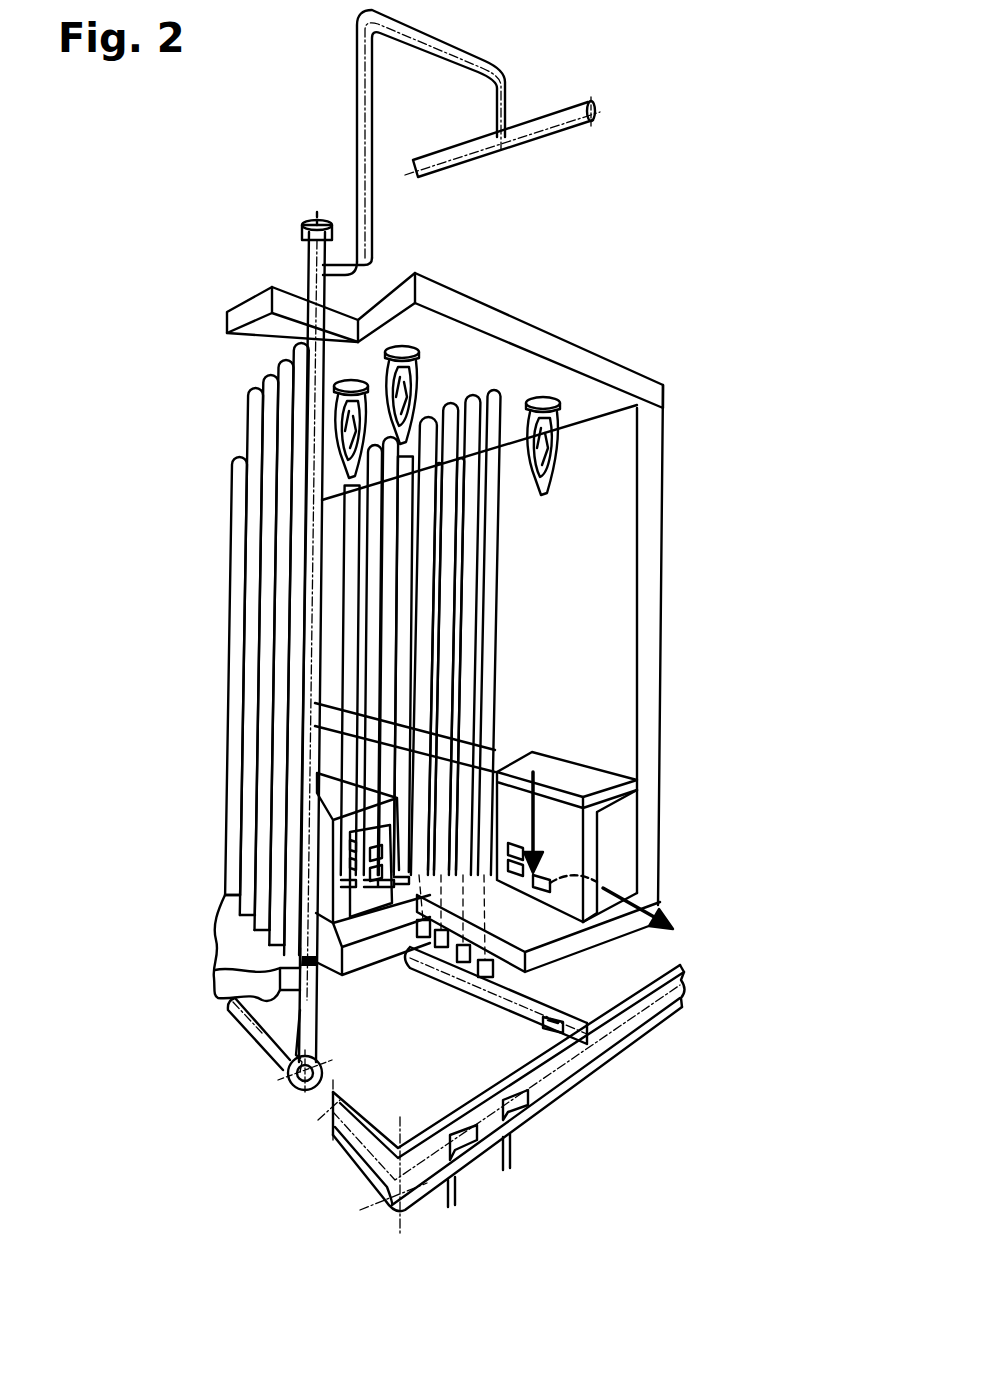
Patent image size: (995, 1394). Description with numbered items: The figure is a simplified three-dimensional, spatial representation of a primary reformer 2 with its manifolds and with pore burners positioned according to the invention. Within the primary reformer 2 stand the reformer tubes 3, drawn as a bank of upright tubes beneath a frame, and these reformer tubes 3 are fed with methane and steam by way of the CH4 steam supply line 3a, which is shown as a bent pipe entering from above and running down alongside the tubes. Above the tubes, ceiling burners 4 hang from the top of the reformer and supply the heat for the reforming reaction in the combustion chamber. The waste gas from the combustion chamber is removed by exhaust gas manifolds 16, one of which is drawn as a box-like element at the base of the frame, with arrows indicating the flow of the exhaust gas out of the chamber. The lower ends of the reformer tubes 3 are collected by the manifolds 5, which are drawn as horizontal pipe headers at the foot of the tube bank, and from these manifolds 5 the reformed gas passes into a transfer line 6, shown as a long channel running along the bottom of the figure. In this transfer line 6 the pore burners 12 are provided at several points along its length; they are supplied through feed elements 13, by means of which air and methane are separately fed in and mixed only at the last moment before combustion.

The primary reformer 2 is at (687, 220).
The reformer tubes 3 is at (283, 697).
The CH4 steam supply line 3a is at (358, 100).
The ceiling burners 4 is at (545, 400).
The manifolds 5 is at (438, 963).
The transfer line 6 is at (668, 1003).
The pore burners 12 is at (545, 1028).
The feed elements 13 is at (455, 1206).
The exhaust gas manifolds 16 is at (615, 845).